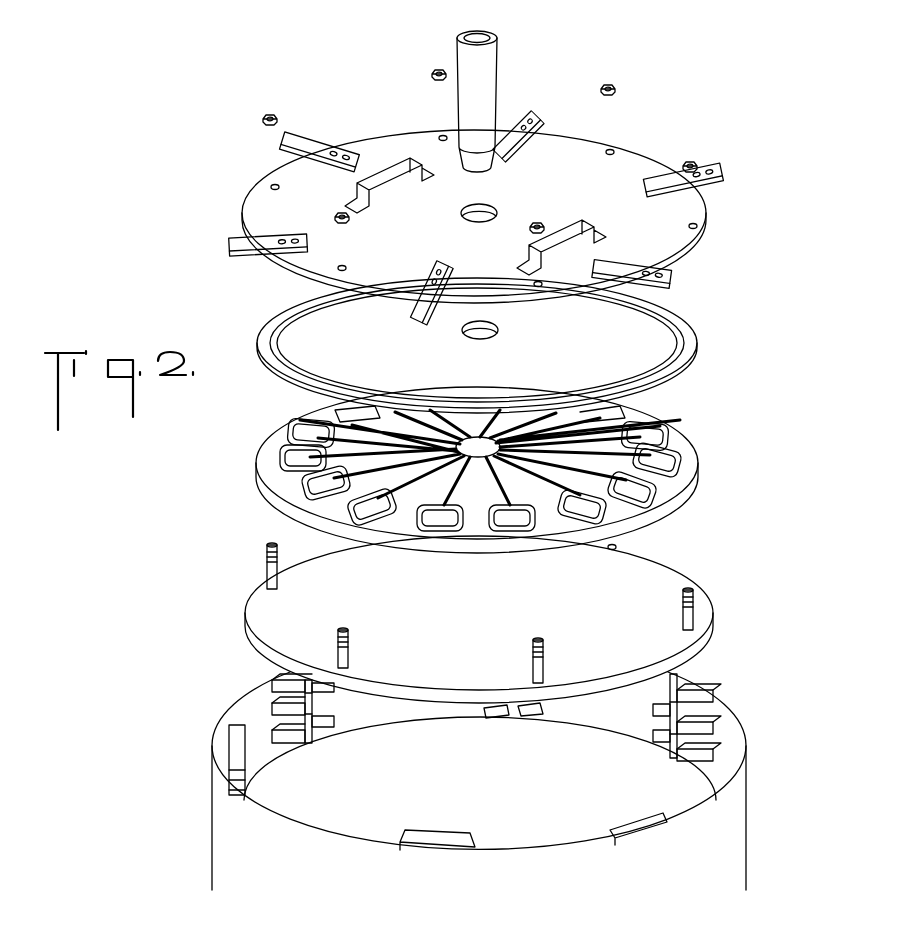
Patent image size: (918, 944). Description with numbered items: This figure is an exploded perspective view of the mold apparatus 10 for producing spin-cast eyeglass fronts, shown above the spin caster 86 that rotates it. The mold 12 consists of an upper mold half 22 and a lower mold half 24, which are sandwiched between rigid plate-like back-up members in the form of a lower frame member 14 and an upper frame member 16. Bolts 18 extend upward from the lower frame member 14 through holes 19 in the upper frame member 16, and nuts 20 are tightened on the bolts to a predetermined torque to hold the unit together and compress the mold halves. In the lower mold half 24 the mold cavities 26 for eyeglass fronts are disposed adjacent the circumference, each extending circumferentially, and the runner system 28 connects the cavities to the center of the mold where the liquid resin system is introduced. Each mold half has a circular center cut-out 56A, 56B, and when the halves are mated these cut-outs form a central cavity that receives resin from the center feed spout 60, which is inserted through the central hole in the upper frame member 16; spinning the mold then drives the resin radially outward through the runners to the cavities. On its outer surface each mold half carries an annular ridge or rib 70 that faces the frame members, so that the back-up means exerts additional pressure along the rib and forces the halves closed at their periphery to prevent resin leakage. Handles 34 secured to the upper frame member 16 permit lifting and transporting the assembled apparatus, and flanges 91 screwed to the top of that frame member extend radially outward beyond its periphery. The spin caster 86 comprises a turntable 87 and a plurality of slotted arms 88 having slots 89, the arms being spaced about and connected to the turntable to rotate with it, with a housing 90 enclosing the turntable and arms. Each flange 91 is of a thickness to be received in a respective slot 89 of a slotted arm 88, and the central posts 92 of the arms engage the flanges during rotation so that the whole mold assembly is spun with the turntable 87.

The mold apparatus 10 is at (760, 392).
The mold 12 is at (670, 388).
The lower frame member 14 is at (690, 572).
The upper frame member 16 is at (707, 209).
The bolts 18 is at (692, 606).
The holes 19 is at (615, 152).
The nuts 20 is at (619, 90).
The upper mold half 22 is at (695, 337).
The lower mold half 24 is at (700, 490).
The mold cavities 26 is at (690, 462).
The runner system 28 is at (450, 487).
The handles 34 is at (396, 178).
The circular center cut-out 56A is at (500, 330).
The circular center cut-out 56B is at (478, 460).
The center feed spout 60 is at (500, 67).
The annular ridge or rib 70 is at (382, 395).
The spin caster 86 is at (770, 742).
The turntable 87 is at (472, 758).
The slotted arms 88 is at (268, 697).
The slots 89 is at (325, 708).
The housing 90 is at (728, 818).
The flanges 91 is at (310, 137).
The central posts 92 is at (675, 740).